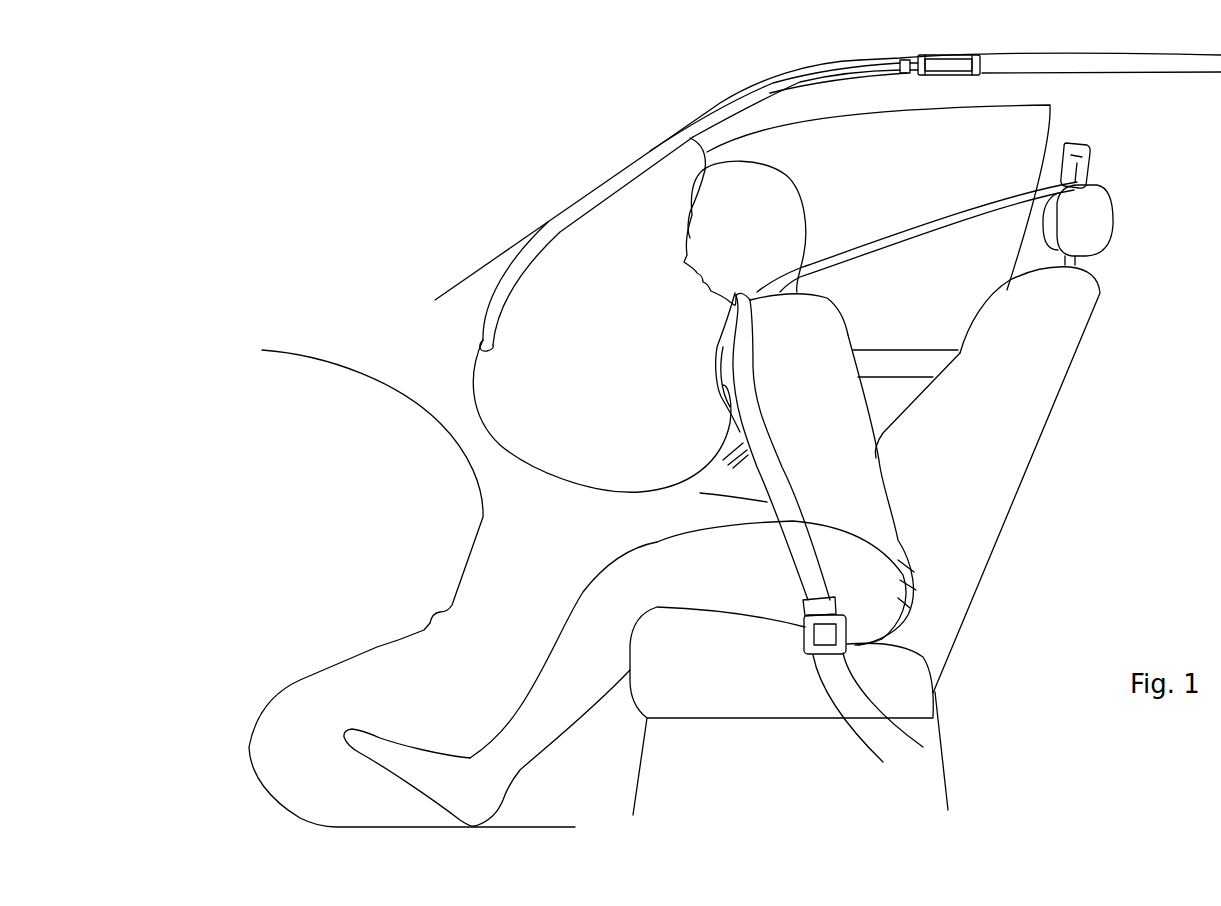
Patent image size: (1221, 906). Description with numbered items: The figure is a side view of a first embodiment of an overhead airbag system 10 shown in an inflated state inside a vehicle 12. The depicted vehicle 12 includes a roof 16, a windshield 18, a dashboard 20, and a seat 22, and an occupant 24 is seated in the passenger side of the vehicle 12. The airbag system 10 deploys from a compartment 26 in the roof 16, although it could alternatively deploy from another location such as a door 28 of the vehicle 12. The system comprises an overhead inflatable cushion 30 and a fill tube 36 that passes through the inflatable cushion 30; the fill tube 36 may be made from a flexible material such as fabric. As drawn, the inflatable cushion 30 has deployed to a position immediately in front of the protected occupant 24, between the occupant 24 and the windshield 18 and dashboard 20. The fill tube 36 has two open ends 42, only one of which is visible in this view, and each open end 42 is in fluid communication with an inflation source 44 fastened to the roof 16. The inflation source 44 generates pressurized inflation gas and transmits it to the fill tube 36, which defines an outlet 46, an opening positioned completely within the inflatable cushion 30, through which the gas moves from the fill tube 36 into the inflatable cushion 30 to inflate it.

The overhead airbag system 10 is at (550, 150).
The vehicle 12 is at (370, 429).
The roof 16 is at (1118, 60).
The windshield 18 is at (470, 282).
The dashboard 20 is at (463, 447).
The seat 22 is at (1006, 412).
The occupant 24 is at (865, 498).
The compartment 26 is at (780, 70).
The door 28 is at (894, 365).
The overhead inflatable cushion 30 is at (619, 361).
The fill tube 36 is at (563, 230).
The open end 42 is at (898, 58).
The inflation source 44 is at (950, 58).
The outlet 46 is at (487, 336).